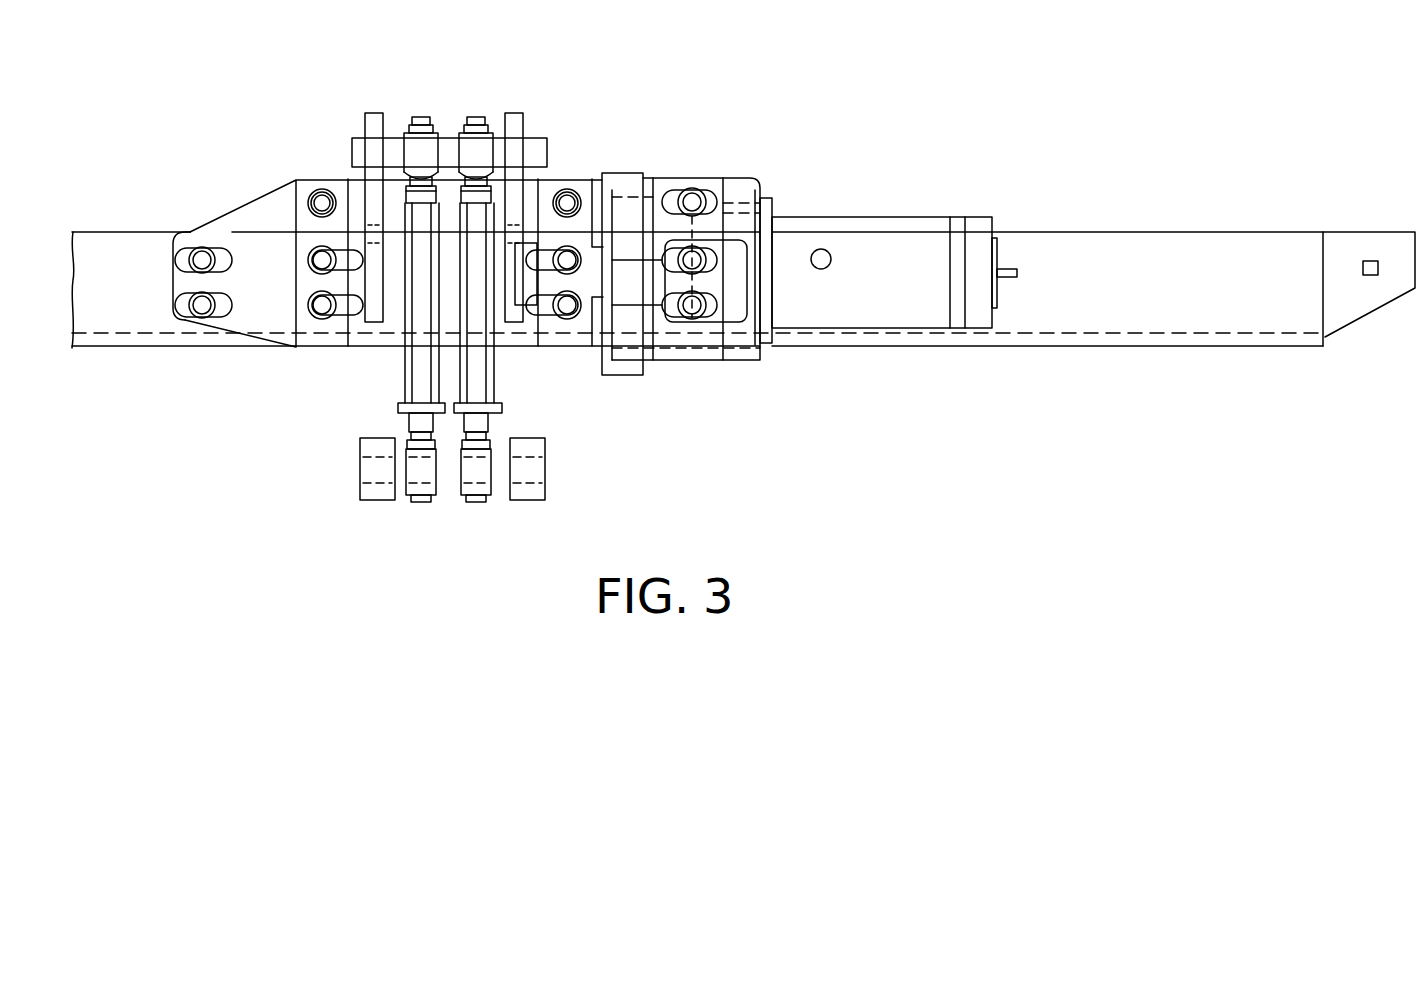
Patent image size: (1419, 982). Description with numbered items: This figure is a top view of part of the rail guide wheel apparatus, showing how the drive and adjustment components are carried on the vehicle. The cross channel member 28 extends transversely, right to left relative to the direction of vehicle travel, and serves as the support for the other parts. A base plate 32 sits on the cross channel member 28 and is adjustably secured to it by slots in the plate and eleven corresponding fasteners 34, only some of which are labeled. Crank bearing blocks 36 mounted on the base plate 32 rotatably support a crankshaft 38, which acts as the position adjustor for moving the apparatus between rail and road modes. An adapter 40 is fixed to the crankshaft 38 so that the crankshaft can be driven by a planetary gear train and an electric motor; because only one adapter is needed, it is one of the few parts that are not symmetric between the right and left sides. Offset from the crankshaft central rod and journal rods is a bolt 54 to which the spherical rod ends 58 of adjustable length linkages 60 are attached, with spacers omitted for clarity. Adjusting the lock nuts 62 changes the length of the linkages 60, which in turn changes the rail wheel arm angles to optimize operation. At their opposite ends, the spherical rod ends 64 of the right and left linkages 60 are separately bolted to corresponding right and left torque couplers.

The cross channel member 28 is at (1200, 232).
The base plate 32 is at (277, 187).
The fasteners 34 is at (175, 307).
The crank bearing blocks 36 is at (328, 187).
The crankshaft 38 is at (375, 113).
The adapter 40 is at (620, 173).
The bolt 54 is at (533, 137).
The spherical rod ends 58 is at (422, 117).
The adjustable length linkages 60 is at (460, 368).
The lock nuts 62 is at (445, 412).
The spherical rod ends 64 is at (482, 502).